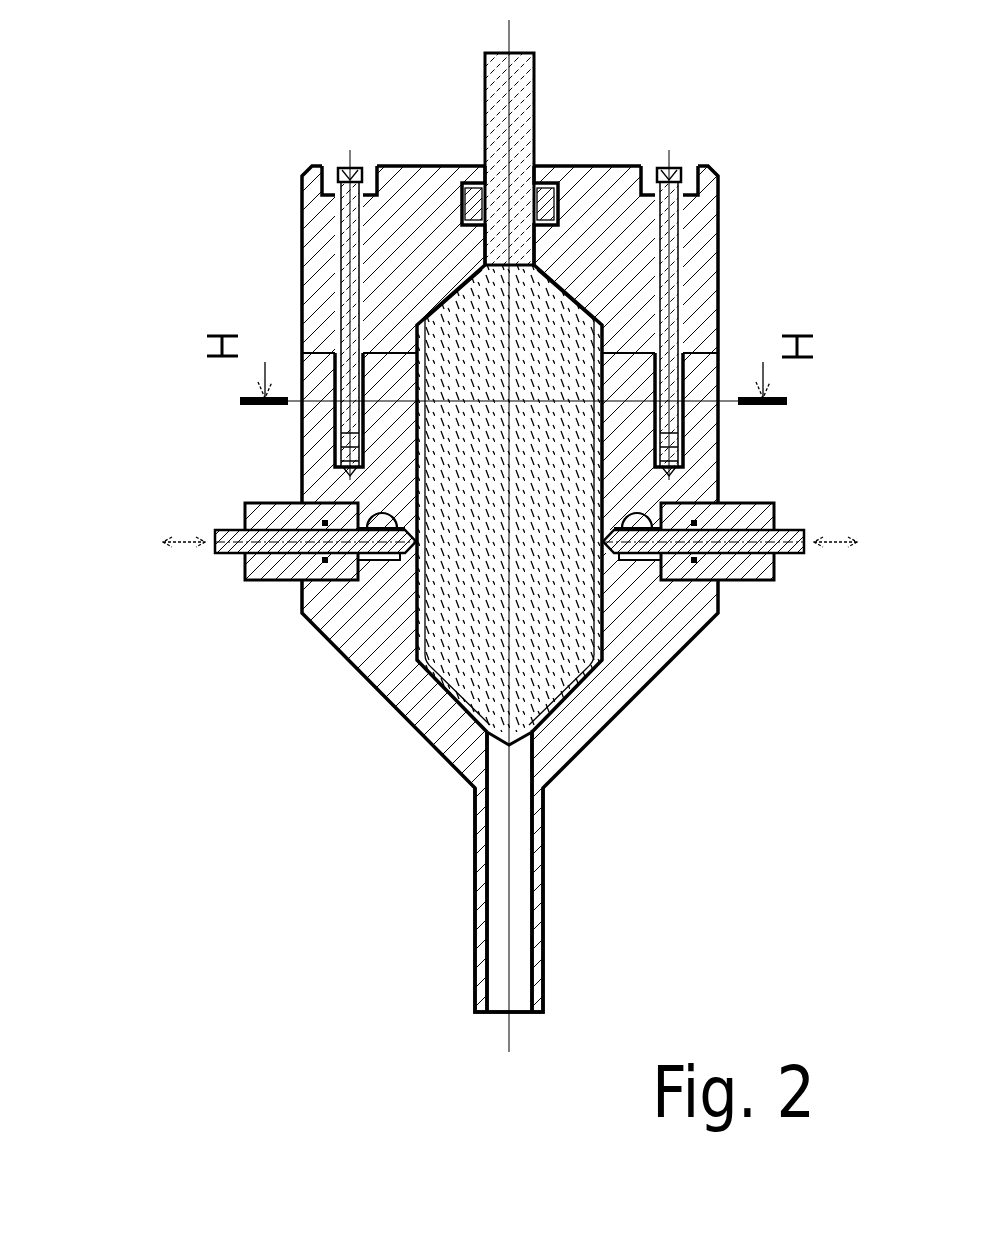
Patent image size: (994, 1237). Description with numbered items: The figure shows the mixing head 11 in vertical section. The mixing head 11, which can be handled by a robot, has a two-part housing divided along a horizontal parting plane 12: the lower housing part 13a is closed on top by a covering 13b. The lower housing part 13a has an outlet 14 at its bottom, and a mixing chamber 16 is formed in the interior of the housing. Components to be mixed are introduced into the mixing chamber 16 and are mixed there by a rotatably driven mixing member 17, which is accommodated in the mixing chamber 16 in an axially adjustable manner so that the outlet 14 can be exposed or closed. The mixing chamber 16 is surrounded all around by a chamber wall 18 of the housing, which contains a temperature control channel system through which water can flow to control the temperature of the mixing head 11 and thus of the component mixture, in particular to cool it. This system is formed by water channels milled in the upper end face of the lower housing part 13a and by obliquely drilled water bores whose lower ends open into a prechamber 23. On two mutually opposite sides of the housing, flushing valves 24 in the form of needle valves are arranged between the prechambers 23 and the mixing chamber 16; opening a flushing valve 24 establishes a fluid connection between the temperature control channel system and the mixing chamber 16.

The mixing head 11 is at (167, 187).
The horizontal parting plane 12 is at (330, 355).
The lower housing part 13a is at (697, 477).
The covering 13b is at (705, 235).
The outlet 14 is at (507, 923).
The mixing chamber 16 is at (417, 325).
The mixing member 17 is at (521, 355).
The chamber wall 18 is at (400, 458).
The prechamber 23 is at (397, 527).
The flushing valve 24 is at (300, 560).